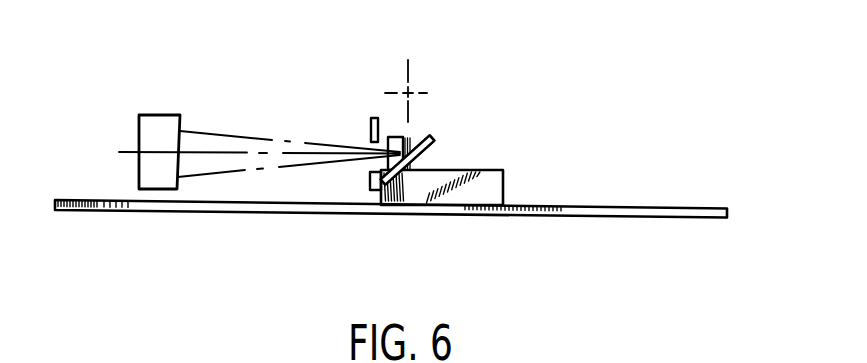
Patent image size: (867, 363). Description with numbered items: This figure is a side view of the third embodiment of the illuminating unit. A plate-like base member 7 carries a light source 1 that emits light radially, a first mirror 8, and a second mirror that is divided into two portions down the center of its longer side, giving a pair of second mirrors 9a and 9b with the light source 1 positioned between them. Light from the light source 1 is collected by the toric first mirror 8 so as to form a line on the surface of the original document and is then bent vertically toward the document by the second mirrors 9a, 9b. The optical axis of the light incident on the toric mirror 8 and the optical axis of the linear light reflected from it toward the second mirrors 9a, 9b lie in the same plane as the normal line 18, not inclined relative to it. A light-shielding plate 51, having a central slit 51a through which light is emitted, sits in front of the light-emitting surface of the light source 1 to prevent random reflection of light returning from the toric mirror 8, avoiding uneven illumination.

The light source 1 is at (495, 188).
The base member 7 is at (685, 208).
The first mirror 8 is at (150, 129).
The normal line 18 is at (205, 152).
The light-shielding plate 51 is at (368, 122).
The slit 51a is at (368, 153).
The second mirror 9a is at (408, 159).
The second mirror 9b is at (432, 136).